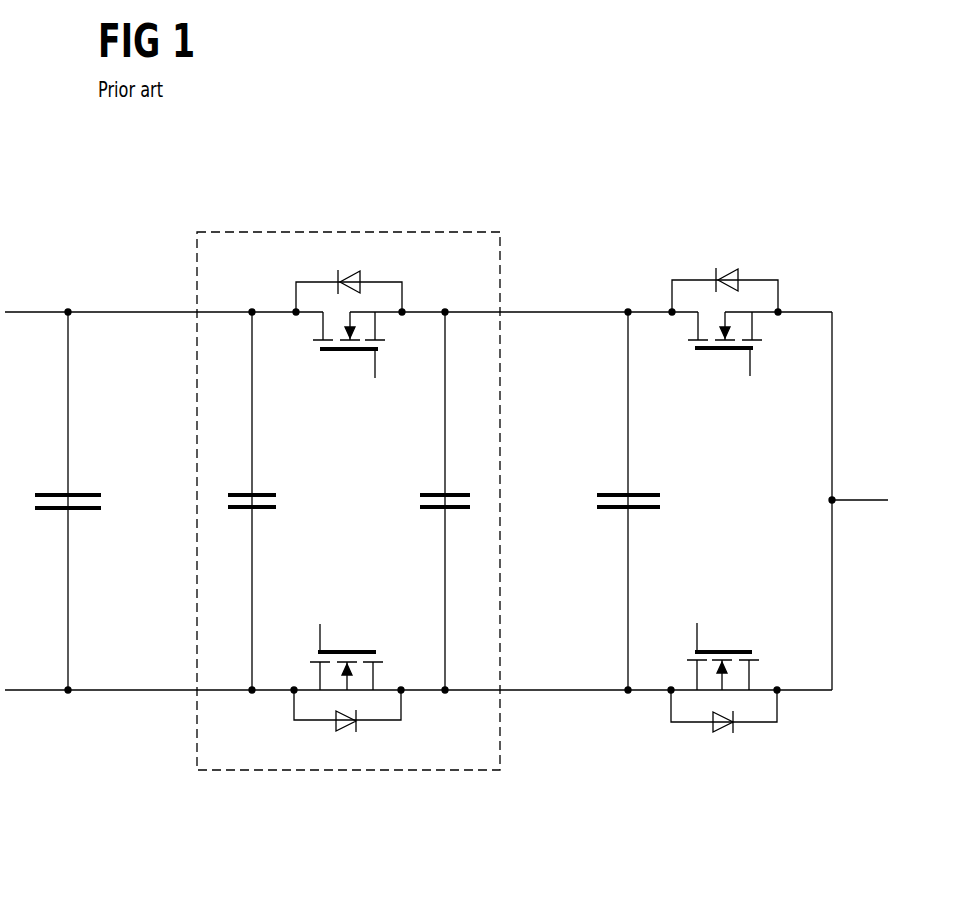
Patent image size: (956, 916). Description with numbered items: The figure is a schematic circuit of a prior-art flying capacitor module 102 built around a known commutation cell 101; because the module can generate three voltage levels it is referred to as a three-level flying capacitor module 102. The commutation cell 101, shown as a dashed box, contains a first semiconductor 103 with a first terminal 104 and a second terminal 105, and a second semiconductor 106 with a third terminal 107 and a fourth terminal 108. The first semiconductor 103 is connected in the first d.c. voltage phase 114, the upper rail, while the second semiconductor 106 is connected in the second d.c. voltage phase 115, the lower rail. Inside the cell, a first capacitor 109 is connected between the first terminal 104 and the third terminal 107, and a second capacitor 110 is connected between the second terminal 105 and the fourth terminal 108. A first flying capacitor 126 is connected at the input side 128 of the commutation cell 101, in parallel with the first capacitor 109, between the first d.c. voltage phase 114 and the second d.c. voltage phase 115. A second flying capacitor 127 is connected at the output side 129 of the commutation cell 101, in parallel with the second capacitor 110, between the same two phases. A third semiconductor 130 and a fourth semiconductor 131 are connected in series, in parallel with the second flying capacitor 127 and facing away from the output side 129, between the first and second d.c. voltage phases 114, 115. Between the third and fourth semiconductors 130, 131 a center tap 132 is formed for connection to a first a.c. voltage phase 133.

The commutation cell 101 is at (355, 231).
The flying capacitor module 102 is at (650, 220).
The first semiconductor 103 is at (338, 351).
The first terminal 104 is at (294, 308).
The second terminal 105 is at (405, 308).
The second semiconductor 106 is at (357, 650).
The third terminal 107 is at (292, 694).
The fourth terminal 108 is at (403, 694).
The first capacitor 109 is at (265, 492).
The second capacitor 110 is at (432, 491).
The first d.c. voltage phase 114 is at (103, 309).
The second d.c. voltage phase 115 is at (108, 693).
The first flying capacitor 126 is at (52, 491).
The second flying capacitor 127 is at (645, 491).
The input side 128 is at (180, 484).
The output side 129 is at (517, 484).
The third semiconductor 130 is at (715, 350).
The fourth semiconductor 131 is at (737, 650).
The center tap 132 is at (834, 503).
The first a.c. voltage phase 133 is at (862, 497).